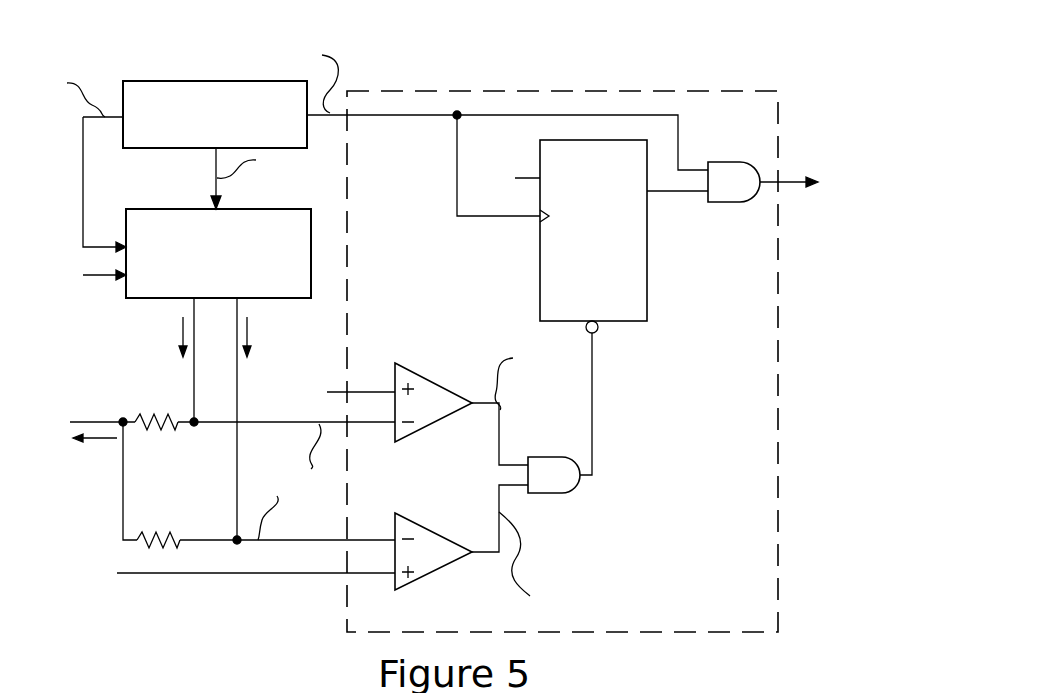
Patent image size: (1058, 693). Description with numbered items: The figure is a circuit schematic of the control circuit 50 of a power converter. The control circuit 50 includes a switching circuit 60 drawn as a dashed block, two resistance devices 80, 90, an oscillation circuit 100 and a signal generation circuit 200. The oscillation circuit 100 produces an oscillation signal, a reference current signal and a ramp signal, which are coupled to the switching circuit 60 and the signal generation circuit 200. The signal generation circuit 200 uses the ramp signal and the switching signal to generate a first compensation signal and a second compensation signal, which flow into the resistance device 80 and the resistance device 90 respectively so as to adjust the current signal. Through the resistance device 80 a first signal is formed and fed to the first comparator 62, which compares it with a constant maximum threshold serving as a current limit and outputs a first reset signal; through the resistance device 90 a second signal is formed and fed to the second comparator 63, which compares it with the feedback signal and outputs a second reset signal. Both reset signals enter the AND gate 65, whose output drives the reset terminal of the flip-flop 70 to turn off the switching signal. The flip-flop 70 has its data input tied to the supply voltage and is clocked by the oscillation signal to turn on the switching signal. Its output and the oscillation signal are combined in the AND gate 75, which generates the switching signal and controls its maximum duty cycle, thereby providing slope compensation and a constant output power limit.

The control circuit 50 is at (836, 38).
The switching circuit 60 is at (778, 325).
The first comparator 62 is at (420, 363).
The second comparator 63 is at (423, 513).
The AND gate 65 is at (553, 494).
The flip-flop 70 is at (647, 272).
The AND gate 75 is at (733, 202).
The resistance device 80 is at (148, 422).
The resistance device 90 is at (145, 538).
The oscillation circuit 100 is at (215, 81).
The signal generation circuit 200 is at (205, 209).